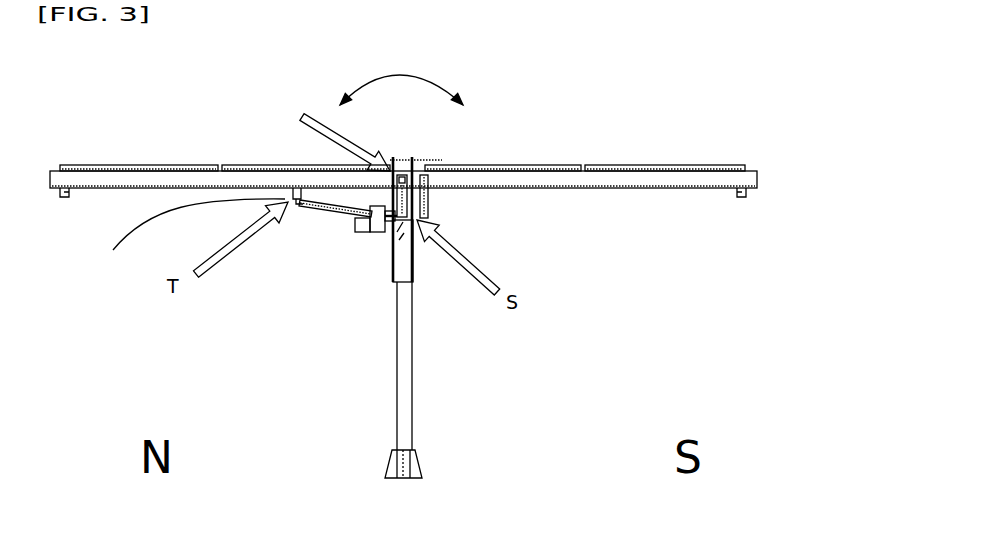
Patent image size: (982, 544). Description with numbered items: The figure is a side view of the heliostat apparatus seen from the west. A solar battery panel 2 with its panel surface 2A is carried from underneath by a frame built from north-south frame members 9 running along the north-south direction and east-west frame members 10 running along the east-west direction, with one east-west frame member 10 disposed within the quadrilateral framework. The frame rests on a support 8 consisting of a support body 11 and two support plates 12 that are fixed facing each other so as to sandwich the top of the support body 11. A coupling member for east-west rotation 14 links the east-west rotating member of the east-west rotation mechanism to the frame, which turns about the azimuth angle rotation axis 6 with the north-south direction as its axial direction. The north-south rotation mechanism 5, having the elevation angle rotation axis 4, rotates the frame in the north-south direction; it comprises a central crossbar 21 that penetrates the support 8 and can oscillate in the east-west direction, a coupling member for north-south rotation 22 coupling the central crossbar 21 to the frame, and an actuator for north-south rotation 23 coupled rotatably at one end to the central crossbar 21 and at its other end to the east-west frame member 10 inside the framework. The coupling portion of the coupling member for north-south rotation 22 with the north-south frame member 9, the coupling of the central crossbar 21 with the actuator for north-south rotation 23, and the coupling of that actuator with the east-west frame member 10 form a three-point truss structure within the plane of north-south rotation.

The solar battery panel 2 is at (397, 111).
The panel surface 2A is at (198, 165).
The elevation angle rotation axis 4 is at (318, 129).
The north-south rotation mechanism 5 is at (272, 268).
The azimuth angle rotation axis 6 is at (428, 160).
The support 8 is at (518, 323).
The north-south frame member 9 is at (615, 181).
The east-west frame member 10 is at (73, 197).
The support body 11 is at (407, 390).
The support plate 12 is at (390, 262).
The coupling member for east-west rotation 14 is at (427, 200).
The central crossbar 21 is at (386, 251).
The coupling member for north-south rotation 22 is at (388, 200).
The actuator for north-south rotation 23 is at (350, 217).